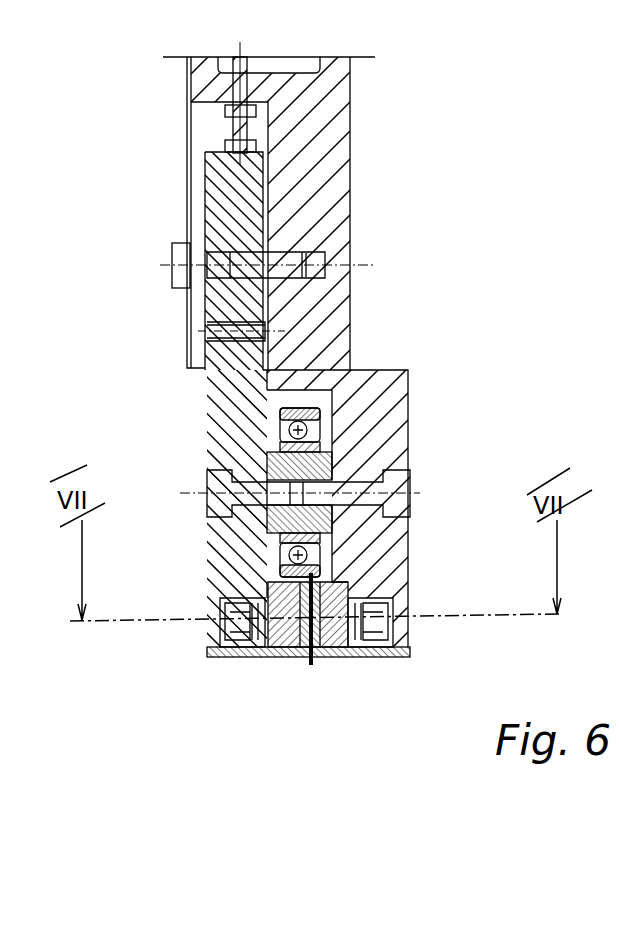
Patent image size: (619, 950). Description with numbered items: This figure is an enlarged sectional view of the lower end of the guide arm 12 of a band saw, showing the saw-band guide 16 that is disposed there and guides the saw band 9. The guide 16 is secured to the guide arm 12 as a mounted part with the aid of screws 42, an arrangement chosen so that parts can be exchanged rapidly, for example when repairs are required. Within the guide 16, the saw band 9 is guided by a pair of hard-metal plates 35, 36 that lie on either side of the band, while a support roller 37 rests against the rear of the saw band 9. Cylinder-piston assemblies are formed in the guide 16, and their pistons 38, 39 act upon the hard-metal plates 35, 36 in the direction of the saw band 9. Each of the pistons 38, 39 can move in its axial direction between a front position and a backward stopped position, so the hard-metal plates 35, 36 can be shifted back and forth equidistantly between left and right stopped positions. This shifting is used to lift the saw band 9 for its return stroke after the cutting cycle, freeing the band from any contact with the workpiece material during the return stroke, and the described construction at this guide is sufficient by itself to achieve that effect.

The guide arm 12 is at (318, 160).
The screws 42 is at (185, 262).
The support roller 37 is at (303, 412).
The saw-band guide 16 is at (383, 430).
The piston 39 is at (400, 658).
The piston 38 is at (216, 656).
The hard-metal plate 35 is at (285, 655).
The saw band 9 is at (311, 660).
The hard-metal plate 36 is at (337, 655).